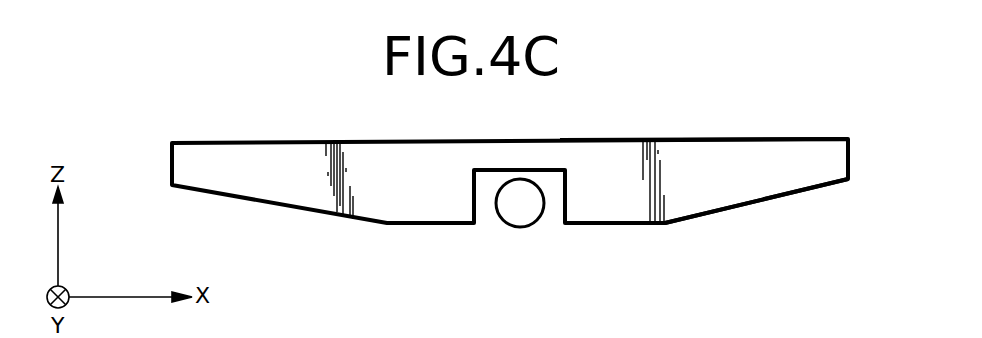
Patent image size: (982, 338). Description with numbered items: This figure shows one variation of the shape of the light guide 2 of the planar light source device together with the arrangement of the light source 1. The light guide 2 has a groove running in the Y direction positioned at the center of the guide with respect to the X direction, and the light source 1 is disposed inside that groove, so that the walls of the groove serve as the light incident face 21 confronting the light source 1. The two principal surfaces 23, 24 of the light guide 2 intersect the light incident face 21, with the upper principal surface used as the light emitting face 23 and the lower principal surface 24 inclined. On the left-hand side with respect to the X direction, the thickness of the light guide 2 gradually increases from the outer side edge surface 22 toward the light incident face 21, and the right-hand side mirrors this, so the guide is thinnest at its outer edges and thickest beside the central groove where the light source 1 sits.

The light source 1 is at (518, 210).
The light guide 2 is at (636, 231).
The light incident face 21 is at (481, 212).
The side edge surface 22 is at (170, 163).
The light emitting face 23 is at (718, 139).
The principal surface 24 is at (763, 204).